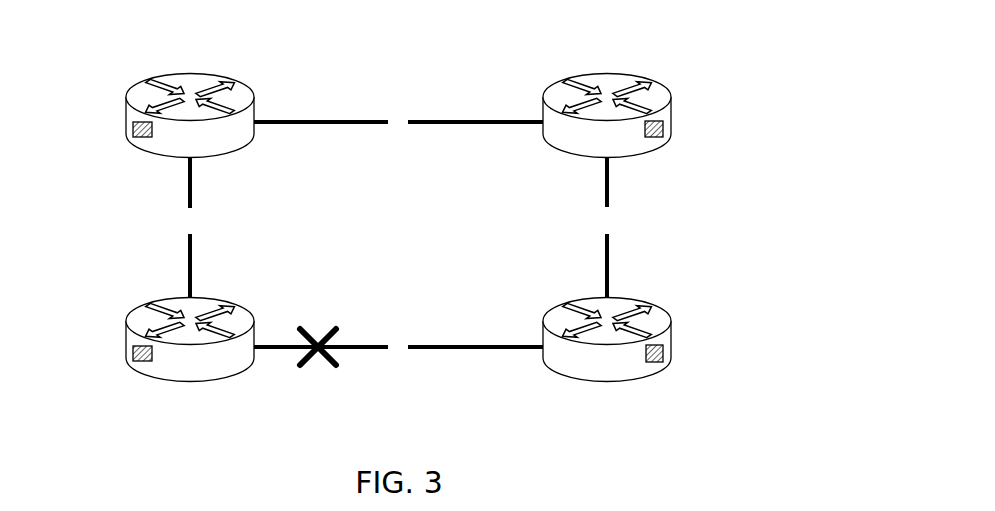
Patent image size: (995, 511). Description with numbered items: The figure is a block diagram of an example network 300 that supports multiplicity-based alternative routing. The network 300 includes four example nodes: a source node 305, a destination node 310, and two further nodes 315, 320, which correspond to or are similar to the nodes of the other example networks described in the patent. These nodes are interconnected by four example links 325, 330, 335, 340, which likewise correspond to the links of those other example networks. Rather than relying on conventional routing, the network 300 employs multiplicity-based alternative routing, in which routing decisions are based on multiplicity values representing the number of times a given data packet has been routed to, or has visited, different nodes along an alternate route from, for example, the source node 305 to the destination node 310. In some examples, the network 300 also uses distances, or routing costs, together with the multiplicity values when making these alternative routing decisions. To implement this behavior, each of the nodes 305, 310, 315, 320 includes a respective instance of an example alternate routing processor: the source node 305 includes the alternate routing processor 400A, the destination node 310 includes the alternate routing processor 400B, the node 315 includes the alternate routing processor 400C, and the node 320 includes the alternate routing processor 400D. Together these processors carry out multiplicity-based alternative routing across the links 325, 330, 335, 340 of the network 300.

The network 300 is at (394, 53).
The source node 305 is at (172, 371).
The destination node 310 is at (589, 371).
The node 315 is at (172, 148).
The node 320 is at (589, 148).
The link 325 is at (432, 348).
The link 330 is at (190, 263).
The link 335 is at (433, 120).
The link 340 is at (607, 263).
The alternate routing processor 400A is at (133, 347).
The alternate routing processor 400B is at (663, 345).
The alternate routing processor 400C is at (133, 123).
The alternate routing processor 400D is at (663, 121).